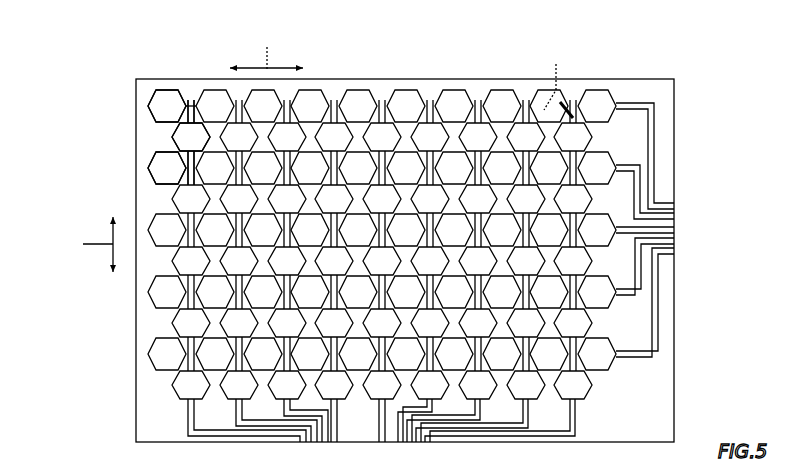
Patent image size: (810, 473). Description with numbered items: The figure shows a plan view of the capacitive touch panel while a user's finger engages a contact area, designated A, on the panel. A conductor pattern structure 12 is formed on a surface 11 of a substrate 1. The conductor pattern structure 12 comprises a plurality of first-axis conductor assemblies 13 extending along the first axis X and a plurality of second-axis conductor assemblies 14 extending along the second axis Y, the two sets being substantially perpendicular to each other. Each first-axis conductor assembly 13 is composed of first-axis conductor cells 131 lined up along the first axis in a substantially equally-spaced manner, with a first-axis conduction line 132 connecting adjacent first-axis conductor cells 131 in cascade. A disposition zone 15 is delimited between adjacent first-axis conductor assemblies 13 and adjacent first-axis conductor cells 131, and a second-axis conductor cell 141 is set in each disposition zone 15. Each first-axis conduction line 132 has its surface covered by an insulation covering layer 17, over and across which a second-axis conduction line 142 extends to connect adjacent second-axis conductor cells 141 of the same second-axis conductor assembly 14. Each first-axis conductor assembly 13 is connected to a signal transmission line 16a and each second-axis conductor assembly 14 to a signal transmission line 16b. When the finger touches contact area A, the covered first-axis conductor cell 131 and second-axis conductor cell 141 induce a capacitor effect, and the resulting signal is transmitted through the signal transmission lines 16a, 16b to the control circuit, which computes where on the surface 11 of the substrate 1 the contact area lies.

The substrate 1 is at (373, 238).
The surface 11 is at (665, 136).
The conductor pattern structure 12 is at (319, 229).
The first-axis conductor assembly 13 is at (360, 89).
The first-axis conductor cell 131 is at (172, 90).
The first-axis conduction line 132 is at (190, 105).
The second-axis conductor assembly 14 is at (148, 249).
The second-axis conductor cell 141 is at (160, 150).
The second-axis conduction line 142 is at (160, 162).
The disposition zone 15 is at (162, 130).
The signal transmission line 16a is at (648, 170).
The signal transmission line 16b is at (190, 412).
The insulation covering layer 17 is at (141, 175).